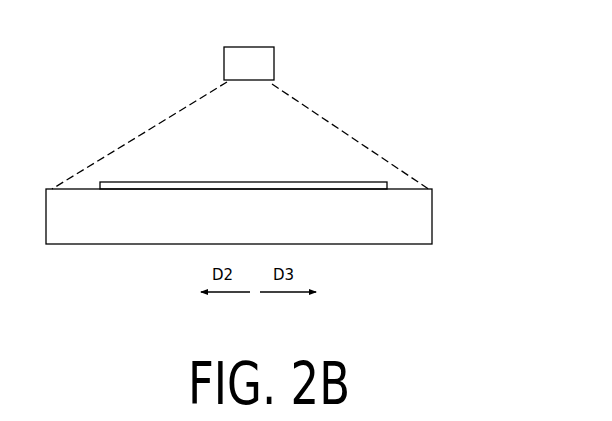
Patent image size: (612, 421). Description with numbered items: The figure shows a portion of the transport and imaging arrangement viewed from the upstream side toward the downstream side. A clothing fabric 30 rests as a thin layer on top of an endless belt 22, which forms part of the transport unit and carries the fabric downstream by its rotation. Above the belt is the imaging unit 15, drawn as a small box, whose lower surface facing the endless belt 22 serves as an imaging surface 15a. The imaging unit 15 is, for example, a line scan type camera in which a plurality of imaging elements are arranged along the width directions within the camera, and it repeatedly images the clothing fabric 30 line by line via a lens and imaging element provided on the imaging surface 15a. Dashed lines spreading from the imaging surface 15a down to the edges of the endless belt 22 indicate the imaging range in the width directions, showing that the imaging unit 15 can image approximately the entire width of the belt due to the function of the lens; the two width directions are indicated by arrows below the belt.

The imaging unit 15 is at (250, 53).
The imaging surface 15a is at (252, 84).
The endless belt 22 is at (429, 221).
The clothing fabric 30 is at (252, 184).